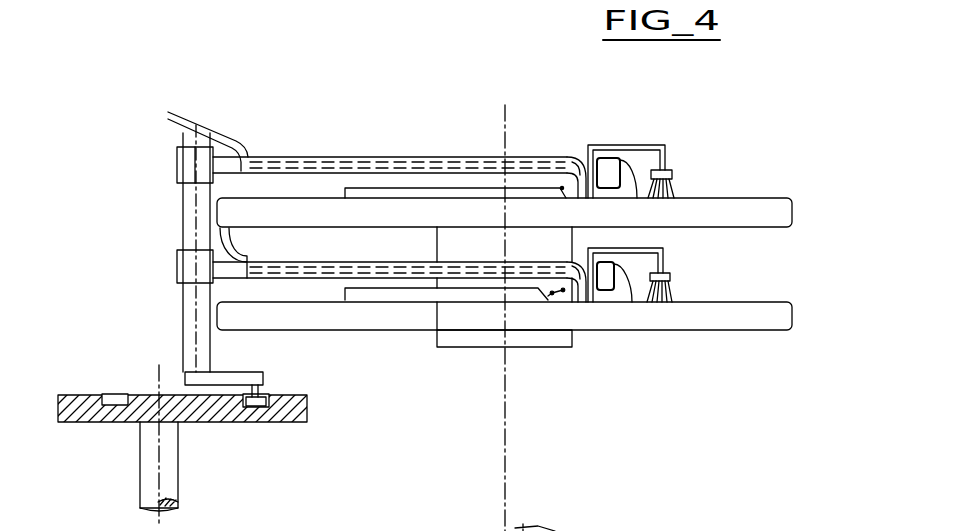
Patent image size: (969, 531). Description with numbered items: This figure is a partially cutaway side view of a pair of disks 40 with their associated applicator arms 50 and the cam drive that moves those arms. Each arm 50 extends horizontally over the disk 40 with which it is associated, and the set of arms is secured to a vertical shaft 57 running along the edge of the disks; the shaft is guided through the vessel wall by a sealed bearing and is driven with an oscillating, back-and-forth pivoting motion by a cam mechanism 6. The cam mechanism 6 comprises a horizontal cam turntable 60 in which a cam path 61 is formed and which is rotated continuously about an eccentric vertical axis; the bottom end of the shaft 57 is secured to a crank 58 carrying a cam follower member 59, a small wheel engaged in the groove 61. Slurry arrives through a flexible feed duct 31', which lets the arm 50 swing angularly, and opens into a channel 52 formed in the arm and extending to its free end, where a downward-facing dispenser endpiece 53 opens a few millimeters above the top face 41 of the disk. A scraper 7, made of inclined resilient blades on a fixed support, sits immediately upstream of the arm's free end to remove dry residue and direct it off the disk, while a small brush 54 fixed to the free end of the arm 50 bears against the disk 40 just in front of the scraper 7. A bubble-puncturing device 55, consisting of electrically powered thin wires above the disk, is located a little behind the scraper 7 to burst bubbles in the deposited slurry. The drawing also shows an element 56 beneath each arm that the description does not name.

The cam mechanism 6 is at (108, 447).
The scraper 7 is at (608, 172).
The slurry feed duct 31' is at (218, 109).
The disk 40 is at (758, 213).
The top face of the disk 41 is at (732, 197).
The applicator arm 50 is at (449, 154).
The channel 52 is at (339, 162).
The dispenser endpiece 53 is at (574, 158).
The small brush 54 is at (678, 185).
The bubble-puncturing device 55 is at (565, 297).
The pad 56 is at (390, 189).
The vertical shaft 57 is at (188, 312).
The crank 58 is at (227, 366).
The cam follower member 59 is at (265, 390).
The cam turntable 60 is at (75, 403).
The cam path 61 is at (120, 395).